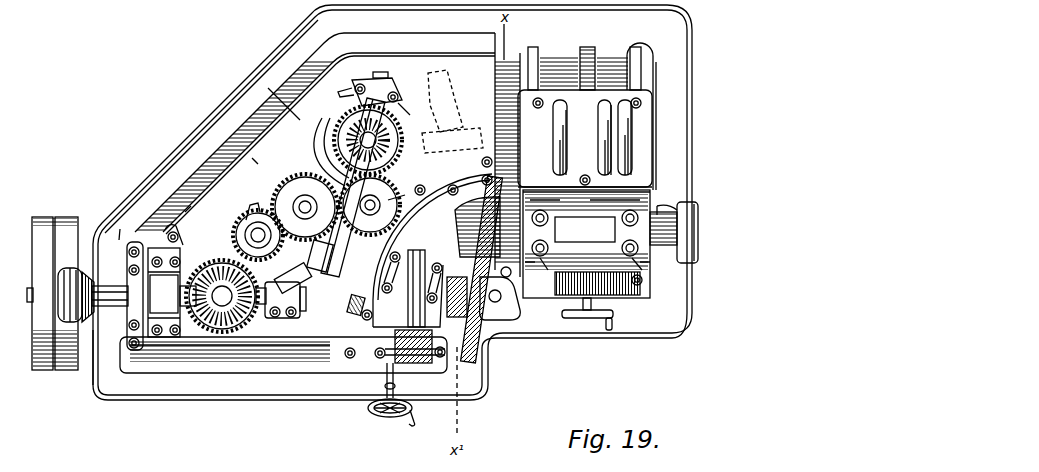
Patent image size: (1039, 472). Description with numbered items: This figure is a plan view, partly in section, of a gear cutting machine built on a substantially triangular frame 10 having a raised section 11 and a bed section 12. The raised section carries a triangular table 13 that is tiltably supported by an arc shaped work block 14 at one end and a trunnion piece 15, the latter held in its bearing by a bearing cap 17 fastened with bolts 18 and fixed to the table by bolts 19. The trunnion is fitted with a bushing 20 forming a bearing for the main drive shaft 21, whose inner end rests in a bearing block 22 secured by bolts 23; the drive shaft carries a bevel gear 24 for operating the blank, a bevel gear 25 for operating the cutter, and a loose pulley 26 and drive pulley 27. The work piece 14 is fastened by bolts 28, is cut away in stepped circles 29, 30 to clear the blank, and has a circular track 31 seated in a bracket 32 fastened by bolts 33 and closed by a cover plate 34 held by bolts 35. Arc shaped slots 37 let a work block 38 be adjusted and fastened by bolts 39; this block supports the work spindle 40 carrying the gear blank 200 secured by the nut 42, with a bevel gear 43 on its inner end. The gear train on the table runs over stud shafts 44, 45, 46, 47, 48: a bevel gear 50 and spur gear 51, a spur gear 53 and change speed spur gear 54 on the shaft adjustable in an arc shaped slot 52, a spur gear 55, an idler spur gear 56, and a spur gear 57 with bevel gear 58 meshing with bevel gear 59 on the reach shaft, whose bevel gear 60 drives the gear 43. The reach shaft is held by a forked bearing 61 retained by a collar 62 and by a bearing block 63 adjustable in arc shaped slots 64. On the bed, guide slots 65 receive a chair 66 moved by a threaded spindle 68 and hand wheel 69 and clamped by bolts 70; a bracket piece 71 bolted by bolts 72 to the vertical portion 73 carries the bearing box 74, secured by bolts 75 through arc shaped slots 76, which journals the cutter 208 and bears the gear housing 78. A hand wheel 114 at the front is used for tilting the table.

The frame 10 is at (300, 83).
The raised section 11 is at (307, 63).
The bed section 12 is at (648, 67).
The table 13 is at (290, 122).
The arc shaped work block 14 is at (440, 200).
The trunnion piece 15 is at (162, 336).
The bearing cap 17 is at (96, 372).
The bolts 18 is at (100, 393).
The bolts 19 is at (162, 244).
The bushing 20 is at (122, 227).
The main drive shaft 21 is at (310, 322).
The bearing block 22 is at (292, 320).
The bolts 23 is at (276, 318).
The bevel gear 24 is at (185, 350).
The bevel gear 25 is at (88, 228).
The loose pulley 26 is at (43, 218).
The drive pulley 27 is at (70, 218).
The bolts 28 is at (487, 156).
The stepped circle 29 is at (437, 262).
The stepped circle 30 is at (483, 178).
The circularly formed track 31 is at (408, 270).
The bracket 32 is at (428, 364).
The bolts 33 is at (350, 360).
The cover plate 34 is at (440, 357).
The bolts 35 is at (378, 358).
The arc shaped slots 37 is at (416, 220).
The work block 38 is at (470, 368).
The bolts 39 is at (399, 254).
The work spindle 40 is at (285, 258).
The nut 42 is at (500, 320).
The bevel gear 43 is at (355, 292).
The stud shaft 44 is at (236, 358).
The stud shaft 45 is at (170, 232).
The stud shaft 46 is at (302, 140).
The stud shaft 47 is at (397, 185).
The stud shaft 48 is at (404, 128).
The bevel gear 50 is at (222, 333).
The spur gear 51 is at (252, 330).
The arc shaped slot 52 is at (188, 208).
The spur gear 53 is at (240, 232).
The change speed spur gear 54 is at (240, 198).
The spur gear 55 is at (255, 160).
The idler spur gear 56 is at (383, 197).
The spur gear 57 is at (320, 95).
The bevel gear 58 is at (325, 118).
The bevel gear 59 is at (275, 96).
The bevel gear 60 is at (296, 204).
The forked bearing 61 is at (340, 268).
The collar 62 is at (303, 255).
The bearing block 63 is at (372, 82).
The arc shaped slots 64 is at (290, 120).
The guide slots 65 is at (535, 45).
The chair 66 is at (640, 130).
The threaded spindle 68 is at (592, 60).
The hand wheel 69 is at (588, 318).
The clamping bolts 70 is at (638, 103).
The bracket piece 71 is at (640, 193).
The bolts 72 is at (580, 198).
The vertically extending portion 73 is at (640, 180).
The bearing box 74 is at (640, 227).
The bolts 75 is at (652, 240).
The arc shaped slots 76 is at (650, 262).
The gear housing 78 is at (690, 208).
The hand wheel 114 is at (390, 425).
The gear blank 200 is at (498, 387).
The cutter 208 is at (508, 278).